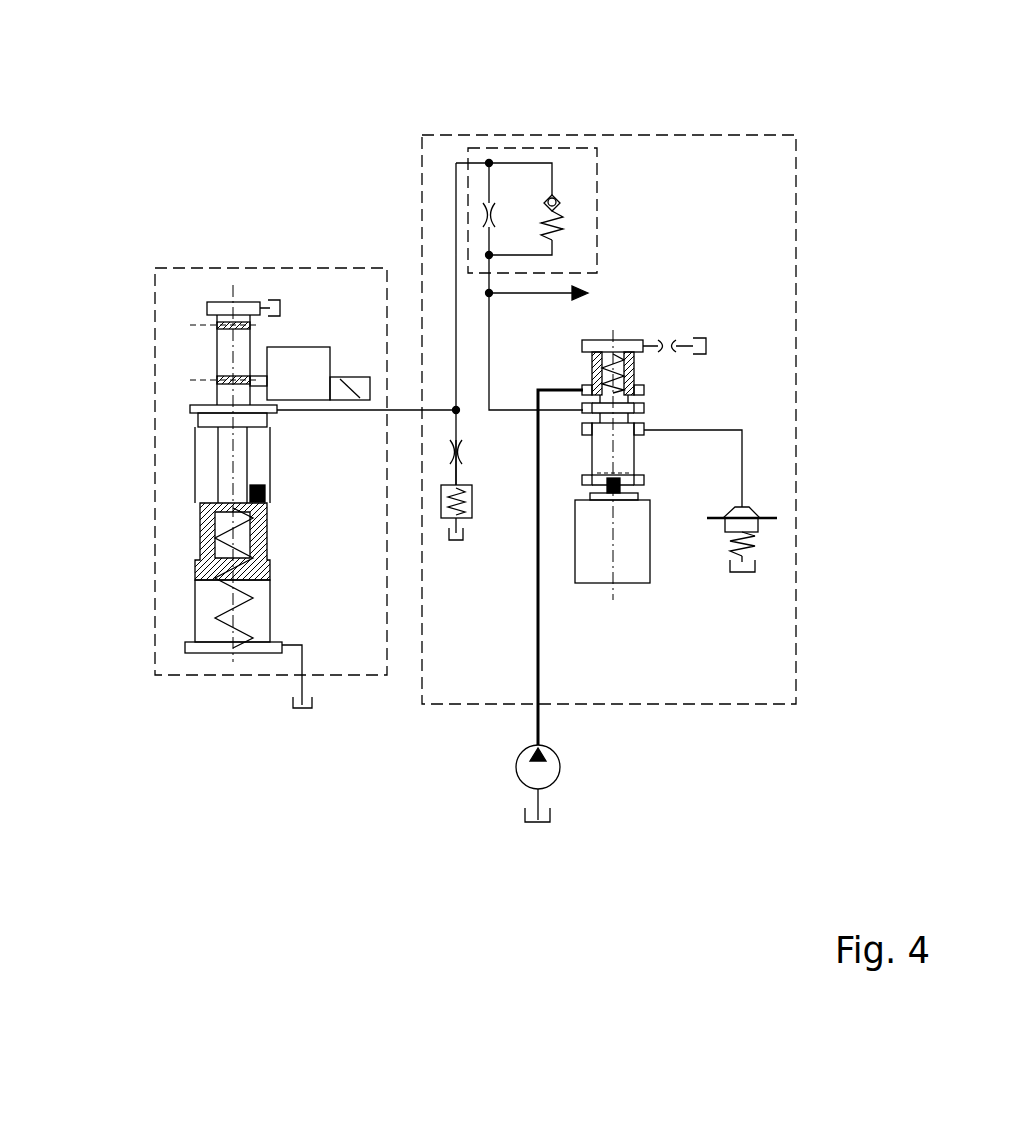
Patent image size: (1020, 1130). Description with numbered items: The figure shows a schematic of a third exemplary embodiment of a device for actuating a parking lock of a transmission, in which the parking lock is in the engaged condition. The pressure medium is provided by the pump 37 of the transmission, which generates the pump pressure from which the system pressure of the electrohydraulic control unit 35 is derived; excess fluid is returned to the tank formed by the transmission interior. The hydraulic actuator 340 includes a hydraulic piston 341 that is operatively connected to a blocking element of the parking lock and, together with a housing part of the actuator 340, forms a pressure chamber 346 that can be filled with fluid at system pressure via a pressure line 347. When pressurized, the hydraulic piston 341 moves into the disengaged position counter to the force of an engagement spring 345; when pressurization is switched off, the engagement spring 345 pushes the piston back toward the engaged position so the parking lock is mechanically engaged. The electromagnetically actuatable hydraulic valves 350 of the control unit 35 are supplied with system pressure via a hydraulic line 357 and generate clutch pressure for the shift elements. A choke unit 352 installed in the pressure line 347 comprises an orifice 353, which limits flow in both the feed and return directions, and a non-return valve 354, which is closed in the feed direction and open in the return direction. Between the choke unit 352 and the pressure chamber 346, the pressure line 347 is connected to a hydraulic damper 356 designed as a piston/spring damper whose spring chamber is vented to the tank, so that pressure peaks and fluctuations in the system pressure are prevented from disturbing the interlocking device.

The electrohydraulic control unit 35 is at (796, 200).
The pump 37 is at (560, 768).
The actuator 340 is at (155, 525).
The hydraulic piston 341 is at (215, 418).
The engagement spring 345 is at (222, 617).
The pressure chamber 346 is at (276, 422).
The pressure line 347 is at (403, 415).
The hydraulic valve 350 is at (628, 329).
The choke unit 352 is at (468, 190).
The orifice 353 is at (485, 215).
The non-return valve 354 is at (577, 197).
The hydraulic damper 356 is at (470, 530).
The hydraulic line 357 is at (543, 294).